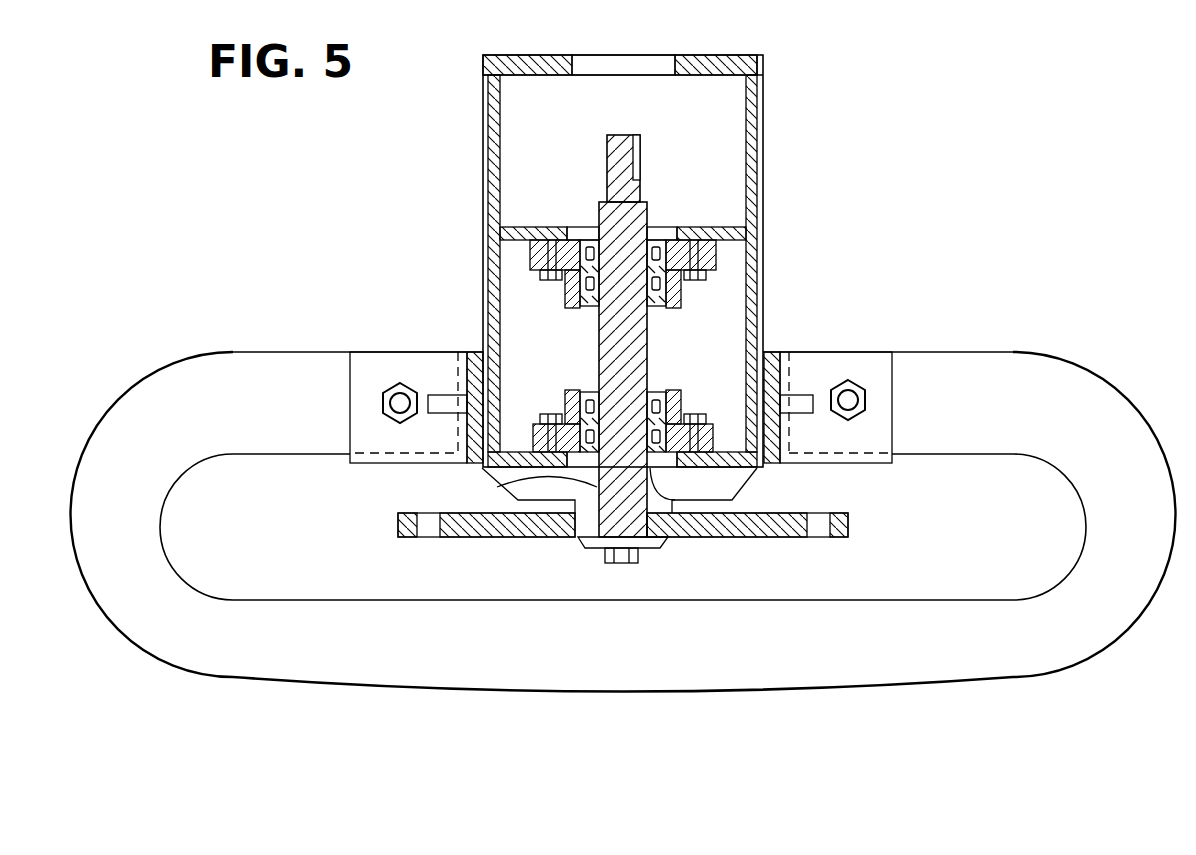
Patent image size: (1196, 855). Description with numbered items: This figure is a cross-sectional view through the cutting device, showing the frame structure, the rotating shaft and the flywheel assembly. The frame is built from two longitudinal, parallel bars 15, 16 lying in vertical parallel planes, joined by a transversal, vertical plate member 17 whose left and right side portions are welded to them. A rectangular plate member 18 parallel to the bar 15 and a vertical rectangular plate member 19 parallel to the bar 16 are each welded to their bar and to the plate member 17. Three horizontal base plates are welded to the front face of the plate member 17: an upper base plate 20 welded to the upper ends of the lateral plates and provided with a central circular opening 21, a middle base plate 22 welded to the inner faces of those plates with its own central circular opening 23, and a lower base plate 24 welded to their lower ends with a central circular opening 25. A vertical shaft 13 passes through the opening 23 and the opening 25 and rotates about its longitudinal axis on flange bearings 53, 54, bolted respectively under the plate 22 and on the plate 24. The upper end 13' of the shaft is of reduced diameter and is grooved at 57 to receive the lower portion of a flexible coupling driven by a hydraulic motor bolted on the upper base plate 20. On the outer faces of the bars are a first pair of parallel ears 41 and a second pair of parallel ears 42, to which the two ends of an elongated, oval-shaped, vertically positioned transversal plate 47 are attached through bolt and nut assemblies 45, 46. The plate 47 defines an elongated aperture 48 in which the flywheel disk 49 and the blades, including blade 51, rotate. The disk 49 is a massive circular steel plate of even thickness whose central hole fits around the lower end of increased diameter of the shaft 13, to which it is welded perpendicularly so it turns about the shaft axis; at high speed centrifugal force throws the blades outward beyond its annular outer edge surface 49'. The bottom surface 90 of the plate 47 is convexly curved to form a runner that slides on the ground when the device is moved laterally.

The vertical shaft 13 is at (584, 369).
The upper end of the shaft 13' is at (588, 168).
The longitudinal bar 15 is at (472, 354).
The longitudinal bar 16 is at (773, 352).
The transversal vertical plate member 17 is at (765, 122).
The rectangular plate member 18 is at (493, 162).
The vertical rectangular plate member 19 is at (752, 203).
The upper base plate 20 is at (737, 63).
The central circular opening 21 is at (633, 66).
The middle base plate 22 is at (740, 232).
The central circular opening 23 is at (666, 235).
The lower base plate 24 is at (748, 470).
The central circular opening 25 is at (497, 487).
The first pair of parallel ears 41 is at (363, 352).
The second pair of parallel ears 42 is at (878, 360).
The bolt and nut assembly 45 is at (400, 385).
The bolt and nut assembly 46 is at (848, 382).
The transversal plate 47 is at (1055, 362).
The elongated aperture 48 is at (188, 575).
The flywheel disk 49 is at (472, 544).
The annular outer edge surface 49' is at (789, 524).
The blade 51 is at (659, 546).
The flange bearing 53 is at (577, 300).
The flange bearing 54 is at (683, 393).
The groove 57 is at (641, 155).
The bottom surface 90 is at (693, 694).